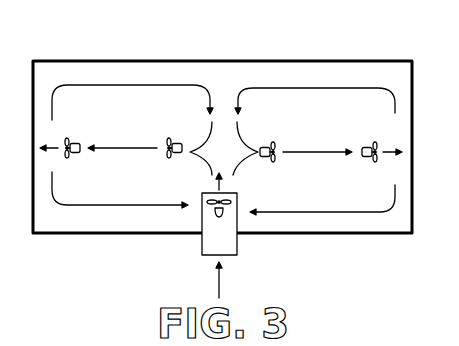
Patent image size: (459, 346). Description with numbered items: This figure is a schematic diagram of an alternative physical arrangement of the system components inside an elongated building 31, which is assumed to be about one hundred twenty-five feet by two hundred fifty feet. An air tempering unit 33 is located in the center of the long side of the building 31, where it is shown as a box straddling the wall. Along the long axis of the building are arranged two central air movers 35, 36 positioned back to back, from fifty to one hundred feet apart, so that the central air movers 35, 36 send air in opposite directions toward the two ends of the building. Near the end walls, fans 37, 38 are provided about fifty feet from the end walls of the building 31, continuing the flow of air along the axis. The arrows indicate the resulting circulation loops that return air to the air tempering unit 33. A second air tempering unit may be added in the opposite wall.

The building 31 is at (413, 126).
The air tempering unit 33 is at (237, 203).
The central air mover 35 is at (177, 142).
The central air mover 36 is at (263, 146).
The fan 37 is at (74, 142).
The fan 38 is at (364, 148).